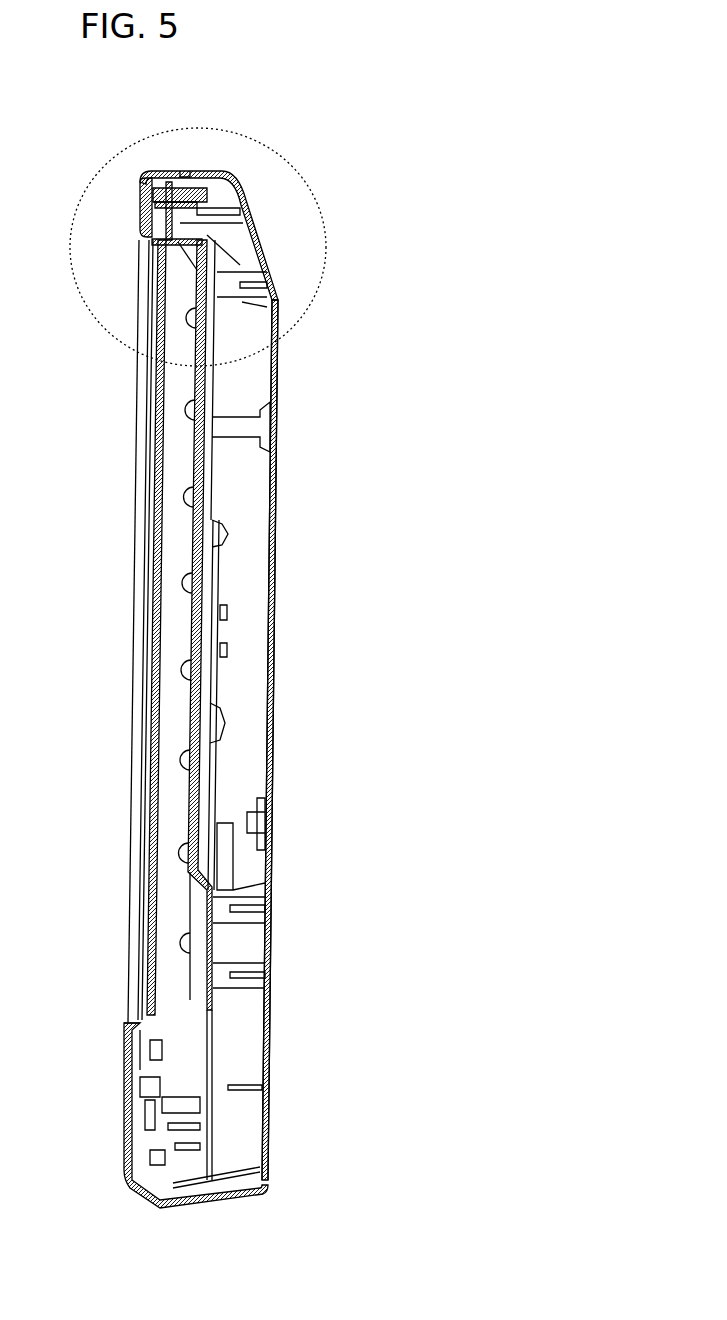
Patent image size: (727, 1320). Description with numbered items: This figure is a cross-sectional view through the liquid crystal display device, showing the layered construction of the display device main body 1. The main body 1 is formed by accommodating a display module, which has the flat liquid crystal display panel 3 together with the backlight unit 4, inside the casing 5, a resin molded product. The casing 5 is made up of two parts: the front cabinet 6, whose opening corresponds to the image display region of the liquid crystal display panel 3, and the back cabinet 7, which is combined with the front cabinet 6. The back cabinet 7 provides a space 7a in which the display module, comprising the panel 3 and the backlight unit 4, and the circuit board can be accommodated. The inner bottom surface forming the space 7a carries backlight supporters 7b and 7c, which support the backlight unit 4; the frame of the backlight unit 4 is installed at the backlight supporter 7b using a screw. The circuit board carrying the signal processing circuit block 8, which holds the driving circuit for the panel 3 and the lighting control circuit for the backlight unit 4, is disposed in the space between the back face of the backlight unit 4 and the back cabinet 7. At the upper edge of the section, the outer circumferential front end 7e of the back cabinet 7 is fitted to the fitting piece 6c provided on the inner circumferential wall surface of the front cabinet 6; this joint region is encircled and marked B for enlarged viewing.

The display device main body 1 is at (133, 427).
The liquid crystal display panel 3 is at (148, 527).
The backlight unit 4 is at (203, 337).
The casing 5 is at (210, 1193).
The front cabinet 6 is at (138, 200).
The fitting piece 6c is at (157, 170).
The back cabinet 7 is at (238, 430).
The space 7a is at (250, 673).
The backlight supporter 7b is at (248, 277).
The backlight supporter 7c is at (255, 903).
The outer circumferential front end 7e is at (182, 170).
The signal processing circuit block 8 is at (220, 762).
The enlarged detail region B is at (307, 185).